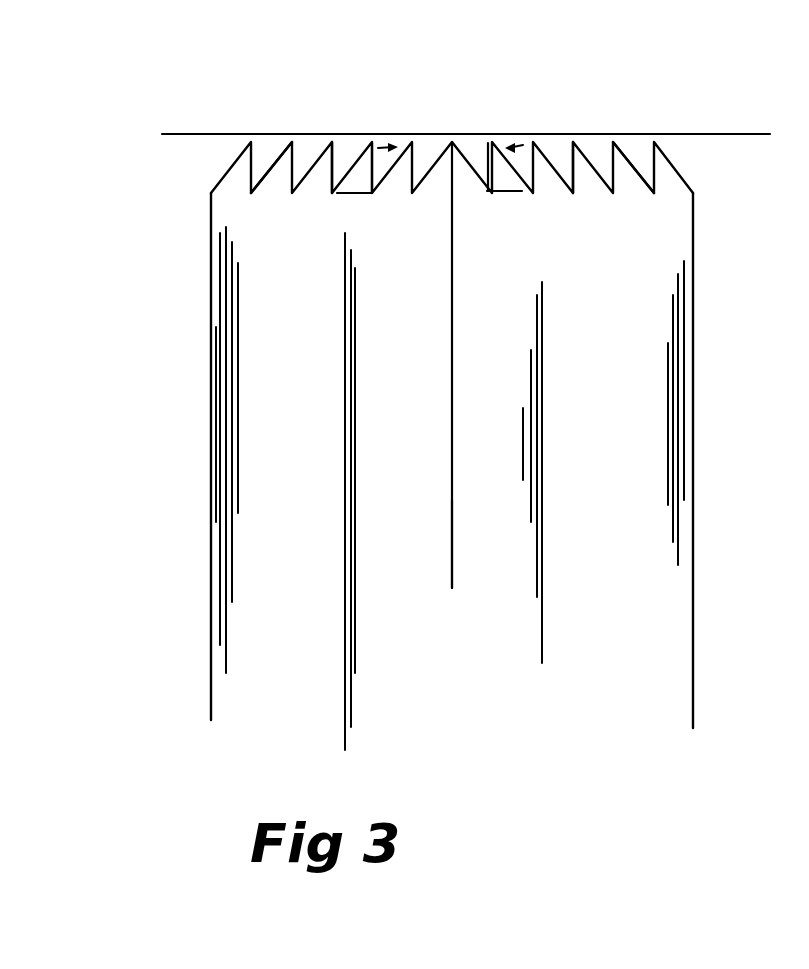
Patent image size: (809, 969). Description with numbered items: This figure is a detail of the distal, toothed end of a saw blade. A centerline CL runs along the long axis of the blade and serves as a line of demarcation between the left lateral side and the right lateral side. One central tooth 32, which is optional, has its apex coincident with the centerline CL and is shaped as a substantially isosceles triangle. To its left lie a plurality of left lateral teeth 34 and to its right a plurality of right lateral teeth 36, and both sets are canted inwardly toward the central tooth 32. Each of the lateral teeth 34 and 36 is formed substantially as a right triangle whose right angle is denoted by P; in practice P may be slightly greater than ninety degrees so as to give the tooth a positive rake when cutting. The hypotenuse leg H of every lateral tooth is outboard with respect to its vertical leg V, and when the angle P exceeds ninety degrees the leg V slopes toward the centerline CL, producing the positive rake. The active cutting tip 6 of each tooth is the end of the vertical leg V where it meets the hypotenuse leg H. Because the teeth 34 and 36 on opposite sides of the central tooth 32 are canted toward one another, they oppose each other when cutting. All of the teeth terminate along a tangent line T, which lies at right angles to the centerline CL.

The active cutting tip 6 is at (514, 120).
The central tooth 32 is at (435, 167).
The left lateral teeth 34 is at (225, 158).
The right lateral teeth 36 is at (677, 148).
The tangent line T is at (754, 122).
The hypotenuse leg H is at (313, 165).
The vertical leg V is at (335, 189).
The right angle P is at (348, 200).
The centerline CL is at (442, 534).